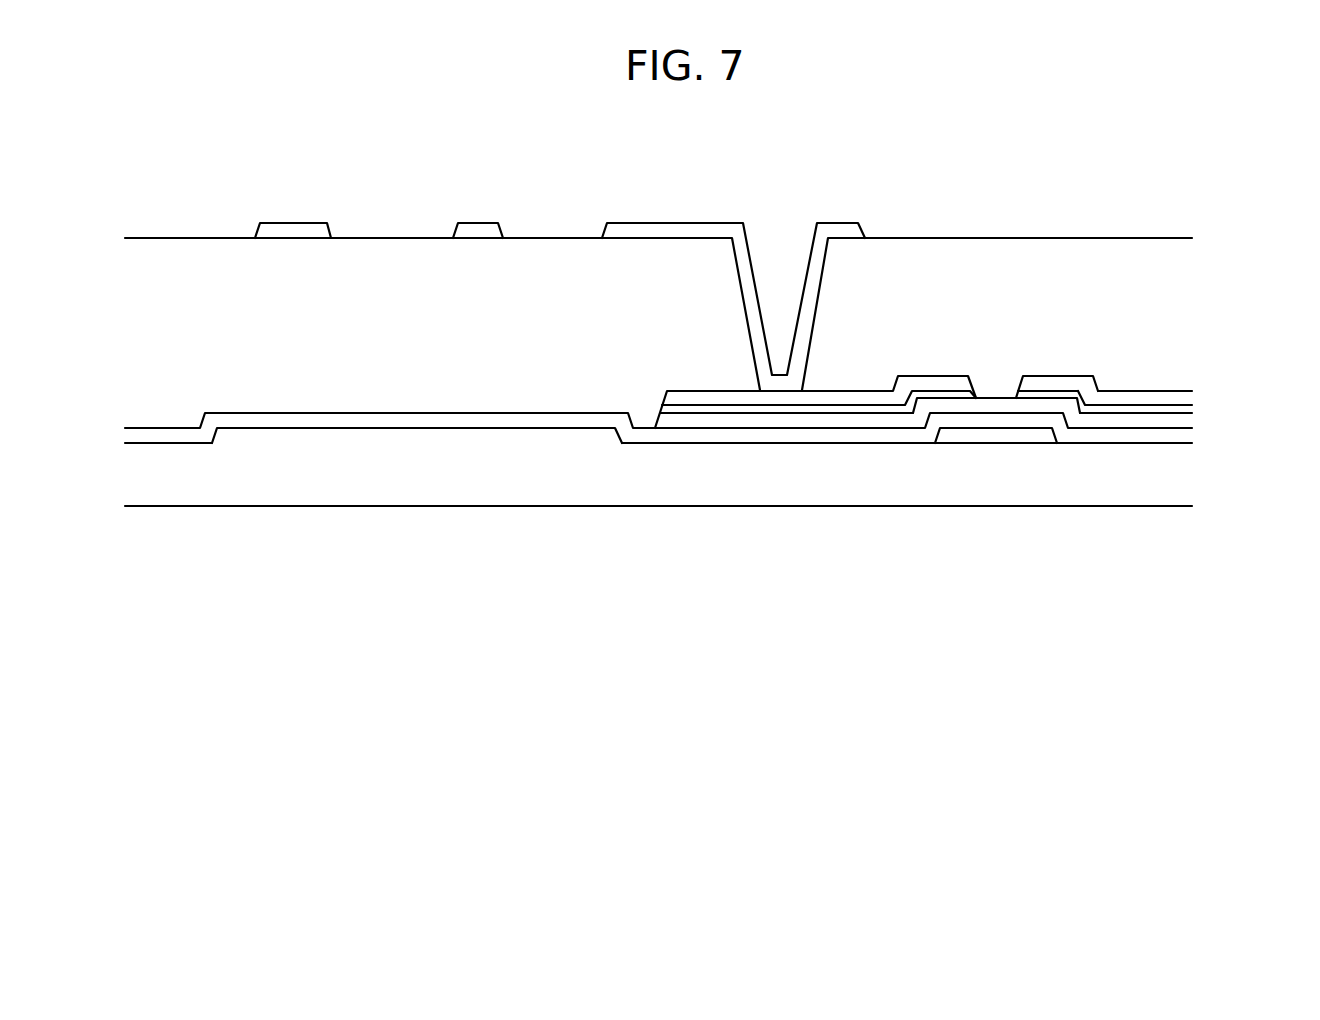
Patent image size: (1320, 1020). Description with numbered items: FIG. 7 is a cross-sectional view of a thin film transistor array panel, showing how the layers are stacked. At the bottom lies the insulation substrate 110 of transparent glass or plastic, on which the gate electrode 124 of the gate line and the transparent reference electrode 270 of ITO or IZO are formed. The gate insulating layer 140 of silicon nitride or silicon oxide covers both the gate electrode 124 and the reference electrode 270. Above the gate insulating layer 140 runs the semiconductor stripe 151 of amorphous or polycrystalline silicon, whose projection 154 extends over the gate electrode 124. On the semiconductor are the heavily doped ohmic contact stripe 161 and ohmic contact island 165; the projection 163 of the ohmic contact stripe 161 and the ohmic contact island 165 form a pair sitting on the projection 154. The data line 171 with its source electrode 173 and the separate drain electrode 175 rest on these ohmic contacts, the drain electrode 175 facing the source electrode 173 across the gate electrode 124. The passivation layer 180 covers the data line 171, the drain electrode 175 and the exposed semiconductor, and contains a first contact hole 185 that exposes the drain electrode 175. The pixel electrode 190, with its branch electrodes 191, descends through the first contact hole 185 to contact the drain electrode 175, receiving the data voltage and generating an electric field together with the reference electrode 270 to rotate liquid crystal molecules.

The insulation substrate 110 is at (1180, 487).
The gate electrode 124 is at (1027, 438).
The gate insulating layer 140 is at (1187, 438).
The semiconductor stripe 151 is at (1187, 422).
The projection 154 is at (980, 405).
The ohmic contact stripe 161 is at (1187, 409).
The projection 163 is at (1035, 395).
The ohmic contact island 165 is at (818, 408).
The data line 171 is at (1155, 400).
The source electrode 173 is at (1060, 382).
The drain electrode 175 is at (722, 400).
The passivation layer 180 is at (562, 262).
The first contact hole 185 is at (743, 290).
The pixel electrode 190 is at (642, 230).
The branch electrode 191 is at (331, 234).
The reference electrode 270 is at (472, 435).